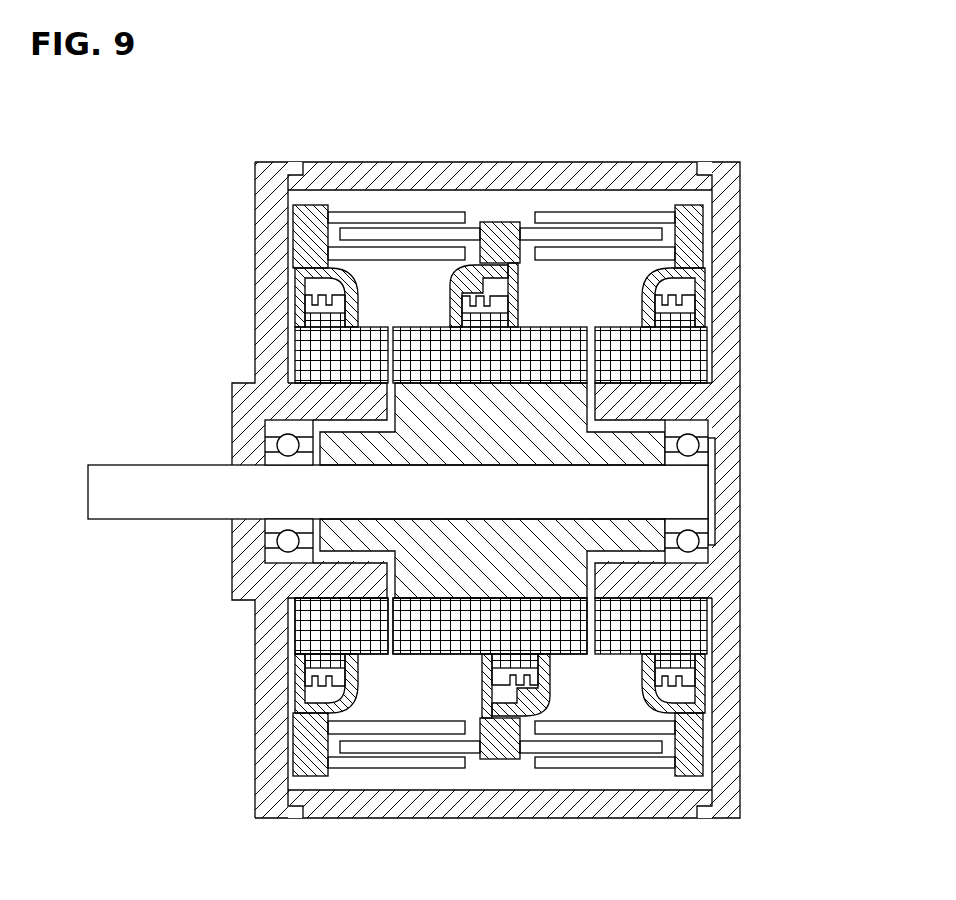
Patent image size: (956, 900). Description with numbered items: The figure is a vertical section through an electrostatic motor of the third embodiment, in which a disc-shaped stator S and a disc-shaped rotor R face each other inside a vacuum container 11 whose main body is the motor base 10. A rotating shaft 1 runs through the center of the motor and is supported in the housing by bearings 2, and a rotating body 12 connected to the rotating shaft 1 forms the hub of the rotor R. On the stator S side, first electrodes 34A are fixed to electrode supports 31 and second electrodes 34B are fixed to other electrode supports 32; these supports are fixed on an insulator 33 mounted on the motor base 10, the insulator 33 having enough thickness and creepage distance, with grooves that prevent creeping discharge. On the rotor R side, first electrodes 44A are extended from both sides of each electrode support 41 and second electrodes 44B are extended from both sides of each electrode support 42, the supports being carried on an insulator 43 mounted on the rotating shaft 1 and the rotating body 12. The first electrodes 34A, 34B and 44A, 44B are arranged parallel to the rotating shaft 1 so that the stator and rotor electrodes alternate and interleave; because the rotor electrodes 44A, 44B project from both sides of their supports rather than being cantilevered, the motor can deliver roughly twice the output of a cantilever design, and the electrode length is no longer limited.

The rotating shaft 1 is at (170, 508).
The bearing 2 is at (268, 546).
The motor base 10 is at (267, 400).
The vacuum container 11 is at (332, 175).
The rotating body 12 is at (575, 443).
The electrode support 31 is at (305, 230).
The electrode support 32 is at (312, 272).
The insulator 33 is at (318, 353).
The first electrode 34A is at (377, 253).
The second electrode 34B is at (403, 760).
The electrode support 41 is at (497, 755).
The electrode support 42 is at (480, 757).
The insulator 43 is at (560, 357).
The first electrode 44A is at (548, 235).
The second electrode 44B is at (543, 745).
The stator S is at (338, 628).
The rotor R is at (567, 640).